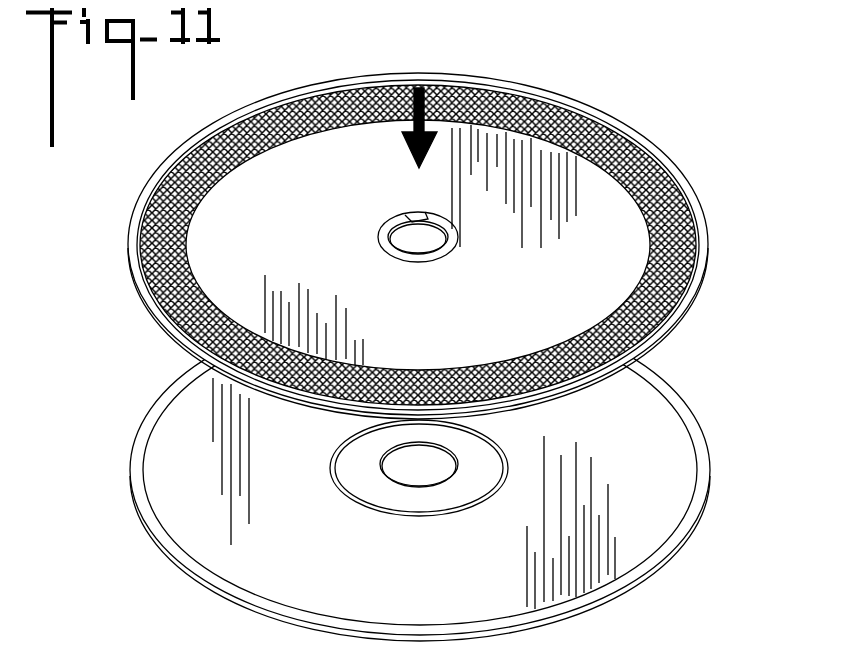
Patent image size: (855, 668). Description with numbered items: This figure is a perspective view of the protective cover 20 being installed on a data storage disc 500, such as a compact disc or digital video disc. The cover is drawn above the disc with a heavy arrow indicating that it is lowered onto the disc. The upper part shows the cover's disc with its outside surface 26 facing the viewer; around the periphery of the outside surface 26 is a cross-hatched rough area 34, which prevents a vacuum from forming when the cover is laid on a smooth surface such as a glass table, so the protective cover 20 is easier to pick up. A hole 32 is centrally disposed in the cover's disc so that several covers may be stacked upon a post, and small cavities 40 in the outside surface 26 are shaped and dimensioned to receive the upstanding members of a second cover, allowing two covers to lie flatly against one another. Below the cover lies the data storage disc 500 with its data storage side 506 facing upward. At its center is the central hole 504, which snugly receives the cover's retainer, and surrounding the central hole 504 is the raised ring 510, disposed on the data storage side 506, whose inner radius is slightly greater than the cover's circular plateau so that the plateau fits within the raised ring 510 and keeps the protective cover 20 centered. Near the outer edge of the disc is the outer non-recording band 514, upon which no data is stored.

The protective cover 20 is at (424, 243).
The rough area 34 is at (192, 163).
The outside surface 26 is at (437, 297).
The hole 32 is at (430, 237).
The cavities 40 is at (412, 217).
The data storage disc 500 is at (427, 473).
The raised ring 510 is at (330, 472).
The central hole 504 is at (423, 470).
The data storage side 506 is at (448, 579).
The outer non-recording band 514 is at (198, 572).